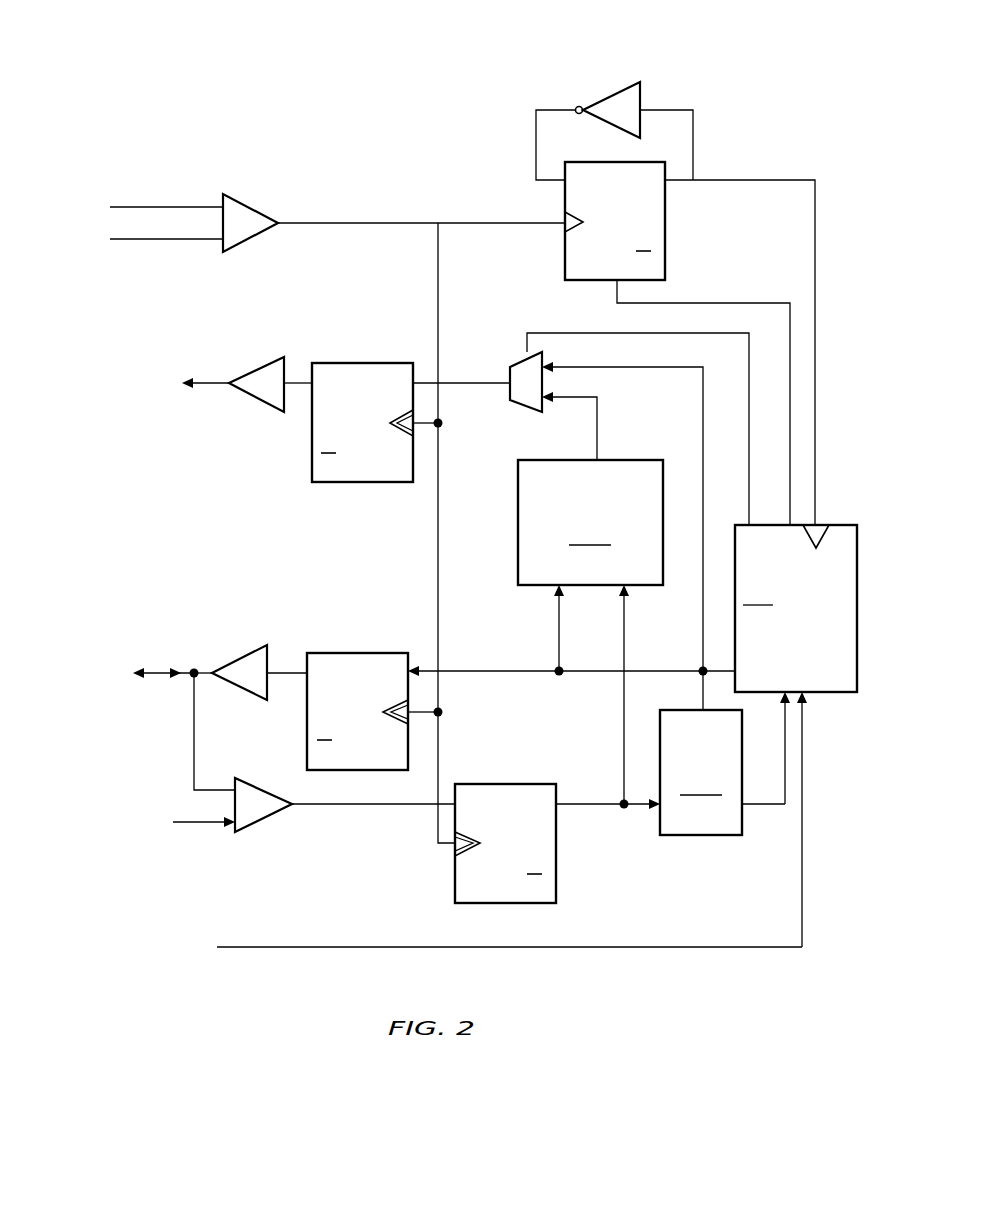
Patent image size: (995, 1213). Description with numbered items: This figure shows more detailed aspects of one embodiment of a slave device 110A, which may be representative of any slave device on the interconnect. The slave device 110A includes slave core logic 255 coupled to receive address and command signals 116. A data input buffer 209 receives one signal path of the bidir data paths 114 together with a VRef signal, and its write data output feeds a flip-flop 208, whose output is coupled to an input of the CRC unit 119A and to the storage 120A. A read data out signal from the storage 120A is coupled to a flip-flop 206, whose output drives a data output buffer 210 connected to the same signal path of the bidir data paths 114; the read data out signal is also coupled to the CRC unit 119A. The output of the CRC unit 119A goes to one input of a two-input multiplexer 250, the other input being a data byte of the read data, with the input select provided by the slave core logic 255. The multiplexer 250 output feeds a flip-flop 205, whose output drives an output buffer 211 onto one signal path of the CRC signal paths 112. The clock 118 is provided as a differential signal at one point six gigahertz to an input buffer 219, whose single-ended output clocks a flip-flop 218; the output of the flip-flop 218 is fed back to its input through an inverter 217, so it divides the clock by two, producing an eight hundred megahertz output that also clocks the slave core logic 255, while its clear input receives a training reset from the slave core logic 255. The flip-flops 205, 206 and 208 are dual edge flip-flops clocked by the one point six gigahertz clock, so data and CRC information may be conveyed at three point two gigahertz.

The slave device 110A is at (205, 95).
The input buffer 219 is at (237, 197).
The clock 118 is at (166, 223).
The inverter 217 is at (615, 88).
The flip-flop 218 is at (573, 281).
The output buffer 211 is at (272, 408).
The CRC signal paths 112 is at (163, 385).
The flip-flop 205 is at (332, 483).
The multiplexer 250 is at (510, 367).
The CRC unit 119A is at (590, 632).
The slave core logic 255 is at (796, 736).
The data output buffer 210 is at (248, 653).
The flip-flop 206 is at (358, 652).
The bidir data paths 114 is at (122, 673).
The data input buffer 209 is at (238, 835).
The flip-flop 208 is at (502, 905).
The storage 120A is at (722, 772).
The address and command signals 116 is at (422, 947).